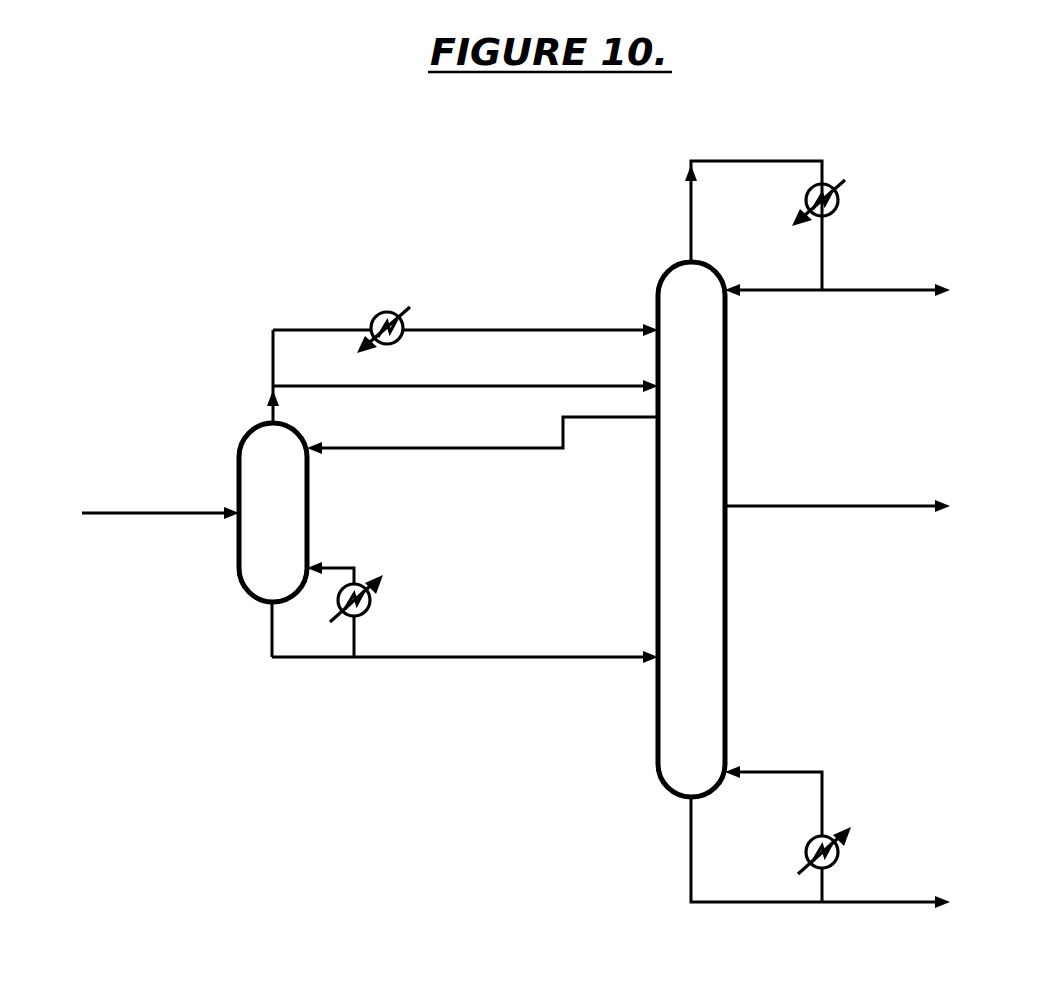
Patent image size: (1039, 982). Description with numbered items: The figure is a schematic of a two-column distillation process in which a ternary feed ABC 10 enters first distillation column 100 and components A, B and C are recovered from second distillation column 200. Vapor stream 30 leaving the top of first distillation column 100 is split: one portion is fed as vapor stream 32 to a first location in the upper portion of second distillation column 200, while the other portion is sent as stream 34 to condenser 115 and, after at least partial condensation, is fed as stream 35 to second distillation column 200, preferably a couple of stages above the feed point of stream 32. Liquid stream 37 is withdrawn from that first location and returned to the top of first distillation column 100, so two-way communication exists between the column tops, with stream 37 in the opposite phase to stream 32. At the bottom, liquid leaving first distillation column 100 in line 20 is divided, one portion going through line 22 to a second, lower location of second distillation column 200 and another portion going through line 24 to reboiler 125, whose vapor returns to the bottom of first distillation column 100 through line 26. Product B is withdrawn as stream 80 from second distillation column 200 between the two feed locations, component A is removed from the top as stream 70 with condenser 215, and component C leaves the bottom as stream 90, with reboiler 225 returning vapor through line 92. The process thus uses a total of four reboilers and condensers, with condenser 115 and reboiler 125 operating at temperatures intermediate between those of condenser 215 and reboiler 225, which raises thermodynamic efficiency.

The feed stream ABC 10 is at (128, 524).
The line 20 is at (270, 645).
The line 22 is at (500, 657).
The line 24 is at (357, 640).
The line 26 is at (325, 568).
The vapor stream 30 is at (270, 418).
The vapor stream 32 is at (500, 386).
The stream 34 is at (271, 354).
The stream 35 is at (500, 330).
The liquid stream 37 is at (500, 448).
The overhead product stream A 70 is at (863, 290).
The stream 80 is at (813, 506).
The bottoms product stream C 90 is at (870, 902).
The reboiler return stream 92 is at (765, 772).
The first distillation column 100 is at (328, 520).
The condenser 115 is at (383, 313).
The reboiler 125 is at (372, 600).
The second distillation column 200 is at (726, 627).
The condenser 215 is at (838, 190).
The reboiler 225 is at (840, 852).